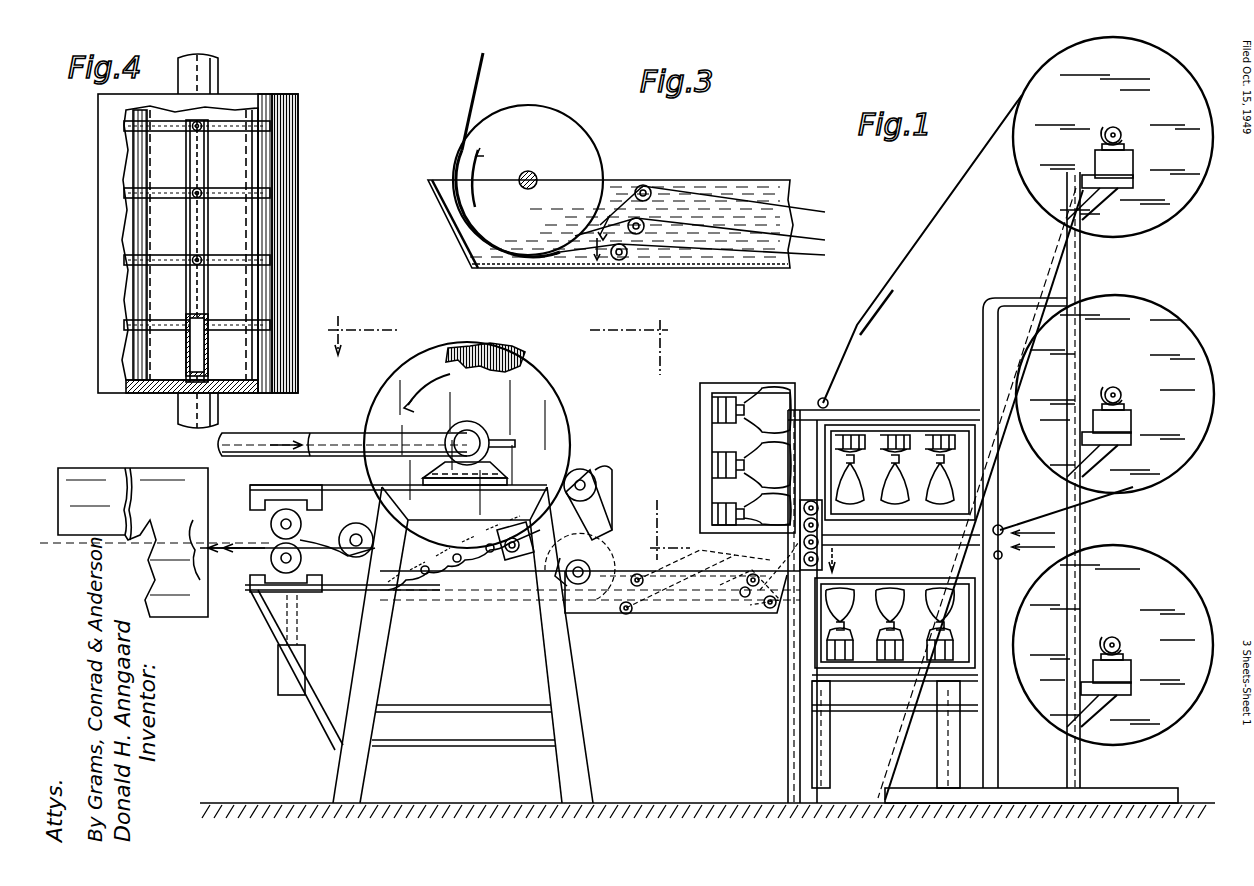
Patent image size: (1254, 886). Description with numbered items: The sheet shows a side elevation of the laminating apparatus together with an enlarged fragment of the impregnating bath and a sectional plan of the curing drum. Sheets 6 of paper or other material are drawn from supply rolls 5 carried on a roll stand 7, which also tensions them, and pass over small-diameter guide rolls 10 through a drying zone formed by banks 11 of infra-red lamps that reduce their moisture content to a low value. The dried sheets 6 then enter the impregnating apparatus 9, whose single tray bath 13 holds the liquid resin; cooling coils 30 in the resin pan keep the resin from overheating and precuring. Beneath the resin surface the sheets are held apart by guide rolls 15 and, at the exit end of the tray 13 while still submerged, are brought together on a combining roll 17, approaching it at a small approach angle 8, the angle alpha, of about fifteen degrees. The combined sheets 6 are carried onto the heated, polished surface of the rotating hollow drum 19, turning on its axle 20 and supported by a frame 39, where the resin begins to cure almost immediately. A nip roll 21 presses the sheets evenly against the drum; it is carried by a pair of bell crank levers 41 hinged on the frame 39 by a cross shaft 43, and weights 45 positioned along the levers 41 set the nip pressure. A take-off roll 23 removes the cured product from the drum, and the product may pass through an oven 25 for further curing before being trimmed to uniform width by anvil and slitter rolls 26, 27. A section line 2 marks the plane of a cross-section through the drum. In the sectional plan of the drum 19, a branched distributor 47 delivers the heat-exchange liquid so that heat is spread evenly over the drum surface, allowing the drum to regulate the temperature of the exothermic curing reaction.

In FIG. 4, the section line 2 is at (364, 325).
In FIG. 1, the section line 2 is at (835, 553).
In FIG. 1, the supply rolls 5 is at (1170, 70).
In FIG. 3, the sheets 6 is at (478, 90).
In FIG. 1, the sheets 6 is at (905, 300).
In FIG. 1, the roll stand 7 is at (1080, 265).
In FIG. 3, the spacing dimension 8 is at (609, 233).
In FIG. 1, the impregnating apparatus 9 is at (500, 568).
In FIG. 1, the guide rolls 10 is at (829, 400).
In FIG. 1, the banks of infra-red drying lamps 11 is at (840, 593).
In FIG. 3, the tray bath 13 is at (700, 268).
In FIG. 1, the tray bath 13 is at (660, 613).
In FIG. 3, the guide rolls 15 is at (650, 188).
In FIG. 1, the guide rolls 15 is at (650, 575).
In FIG. 3, the combining roll 17 is at (570, 130).
In FIG. 1, the combining roll 17 is at (600, 548).
In FIG. 4, the drum 19 is at (300, 170).
In FIG. 1, the drum 19 is at (540, 395).
In FIG. 1, the arbor 20 is at (280, 432).
In FIG. 1, the nip roll 21 is at (586, 468).
In FIG. 1, the take-off roll 23 is at (362, 522).
In FIG. 1, the oven 25 is at (95, 465).
In FIG. 1, the anvil roll 26 is at (262, 562).
In FIG. 1, the slitter roll 27 is at (258, 520).
In FIG. 1, the cooling coils 30 is at (790, 580).
In FIG. 1, the frame 39 is at (568, 668).
In FIG. 1, the bell crank levers 41 is at (478, 562).
In FIG. 1, the cross shaft 43 is at (512, 552).
In FIG. 1, the weights 45 is at (278, 672).
In FIG. 4, the branched distributor 47 is at (200, 300).